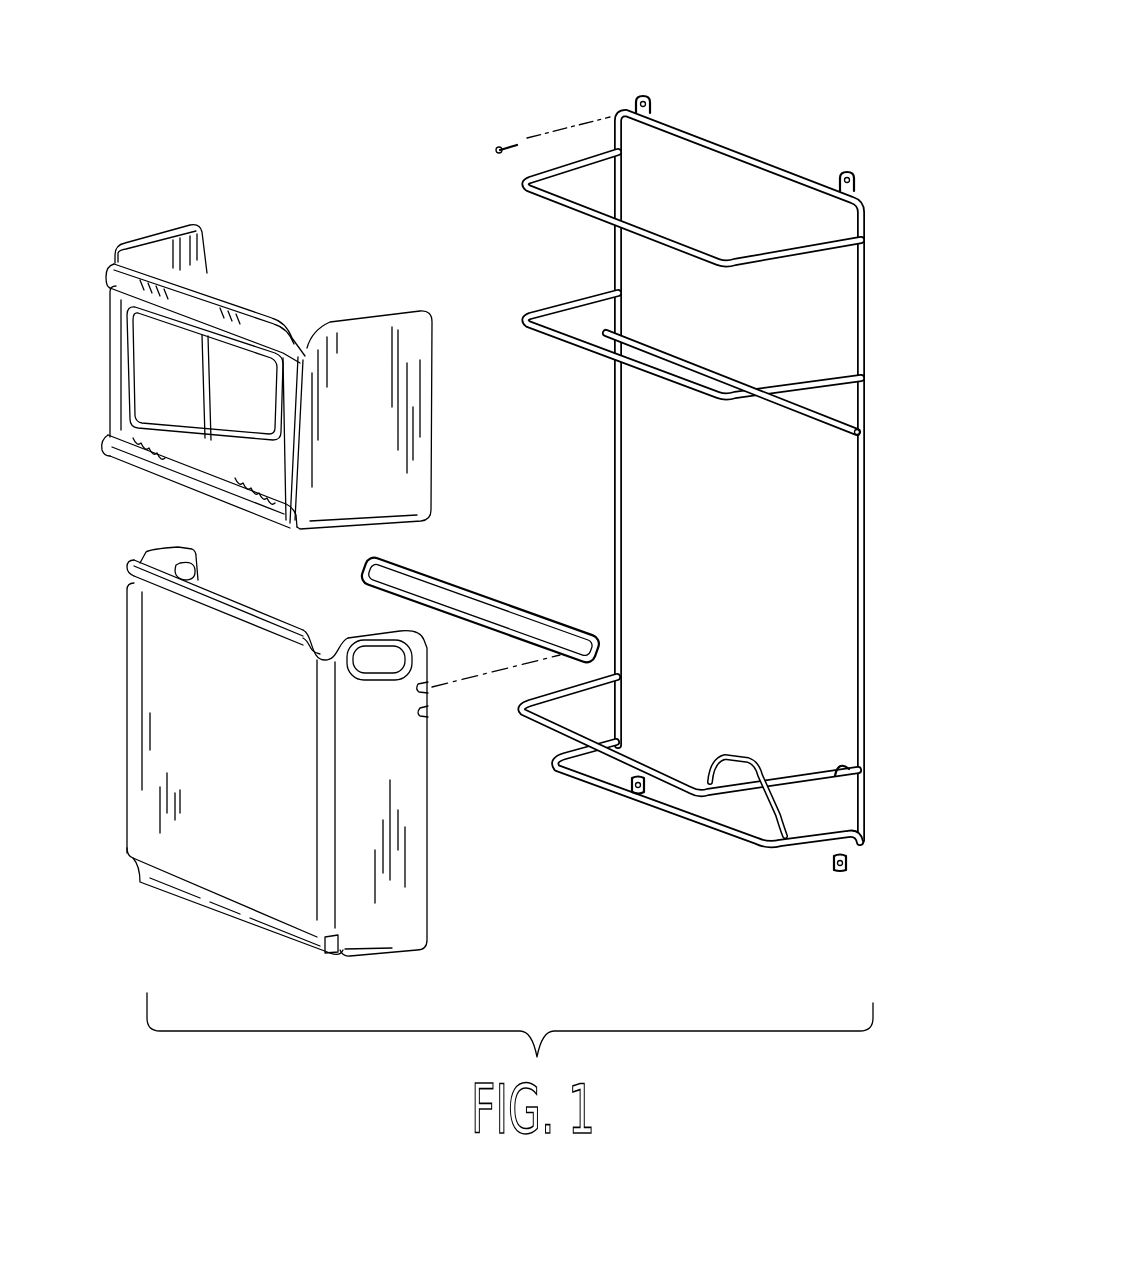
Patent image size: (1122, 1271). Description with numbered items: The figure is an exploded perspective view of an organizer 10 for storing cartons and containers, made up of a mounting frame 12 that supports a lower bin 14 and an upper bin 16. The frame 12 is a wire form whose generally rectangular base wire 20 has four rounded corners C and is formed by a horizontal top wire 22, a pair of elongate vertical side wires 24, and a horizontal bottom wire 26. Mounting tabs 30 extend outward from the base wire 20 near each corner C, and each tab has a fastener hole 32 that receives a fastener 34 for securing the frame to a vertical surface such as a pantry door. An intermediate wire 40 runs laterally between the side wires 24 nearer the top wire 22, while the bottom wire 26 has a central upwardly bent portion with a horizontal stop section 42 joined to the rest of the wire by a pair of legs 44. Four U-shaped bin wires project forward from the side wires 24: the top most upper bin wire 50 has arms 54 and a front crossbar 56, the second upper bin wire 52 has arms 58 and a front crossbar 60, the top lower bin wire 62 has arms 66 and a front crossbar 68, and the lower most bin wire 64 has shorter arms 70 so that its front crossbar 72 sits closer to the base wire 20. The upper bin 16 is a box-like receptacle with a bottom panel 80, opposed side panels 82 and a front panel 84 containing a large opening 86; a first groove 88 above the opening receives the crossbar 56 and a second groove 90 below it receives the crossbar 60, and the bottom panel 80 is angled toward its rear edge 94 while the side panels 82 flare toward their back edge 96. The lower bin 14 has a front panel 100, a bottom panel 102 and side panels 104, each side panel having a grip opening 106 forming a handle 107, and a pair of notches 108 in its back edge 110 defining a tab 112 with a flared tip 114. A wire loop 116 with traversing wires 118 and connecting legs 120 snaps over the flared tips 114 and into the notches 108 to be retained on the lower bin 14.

The organizer 10 is at (598, 995).
The mounting frame 12 is at (692, 496).
The lower bin 14 is at (306, 752).
The upper bin 16 is at (264, 353).
The base wire 20 is at (632, 497).
The top wire 22 is at (772, 168).
The side wires 24 is at (622, 445).
The bottom wire 26 is at (658, 782).
The mounting tabs 30 is at (852, 175).
The fastener hole 32 is at (645, 99).
The fastener 34 is at (505, 145).
The intermediate wire 40 is at (822, 418).
The stop section 42 is at (777, 732).
The legs 44 is at (713, 755).
The top most upper bin wire 50 is at (678, 244).
The upper bin wire 52 is at (685, 340).
The arms 54 is at (582, 165).
The front crossbar 56 is at (560, 198).
The arms 58 is at (567, 300).
The front crossbar 60 is at (640, 365).
The top lower bin wire 62 is at (712, 746).
The lower bin wire 64 is at (728, 852).
The arms 66 is at (605, 684).
The front crossbar 68 is at (556, 766).
The arms 70 is at (612, 752).
The front crossbar 72 is at (637, 794).
The bottom panel 80 is at (238, 438).
The side panels 82 is at (202, 245).
The front panel 84 is at (115, 370).
The opening 86 is at (160, 425).
The first groove 88 is at (110, 280).
The second groove 90 is at (145, 450).
The rear edge 94 is at (265, 455).
The back edge 96 is at (215, 270).
The front panel 100 is at (197, 773).
The bottom panel 102 is at (370, 960).
The side panels 104 is at (383, 927).
The grip opening 106 is at (198, 560).
The handle 107 is at (165, 560).
The notches 108 is at (430, 688).
The back edges 110 is at (430, 860).
The tab 112 is at (405, 708).
The flared tip 114 is at (432, 697).
The wire loop 116 is at (457, 583).
The traversing wires 118 is at (440, 578).
The connecting legs 120 is at (596, 632).
The rounded corners C is at (616, 112).